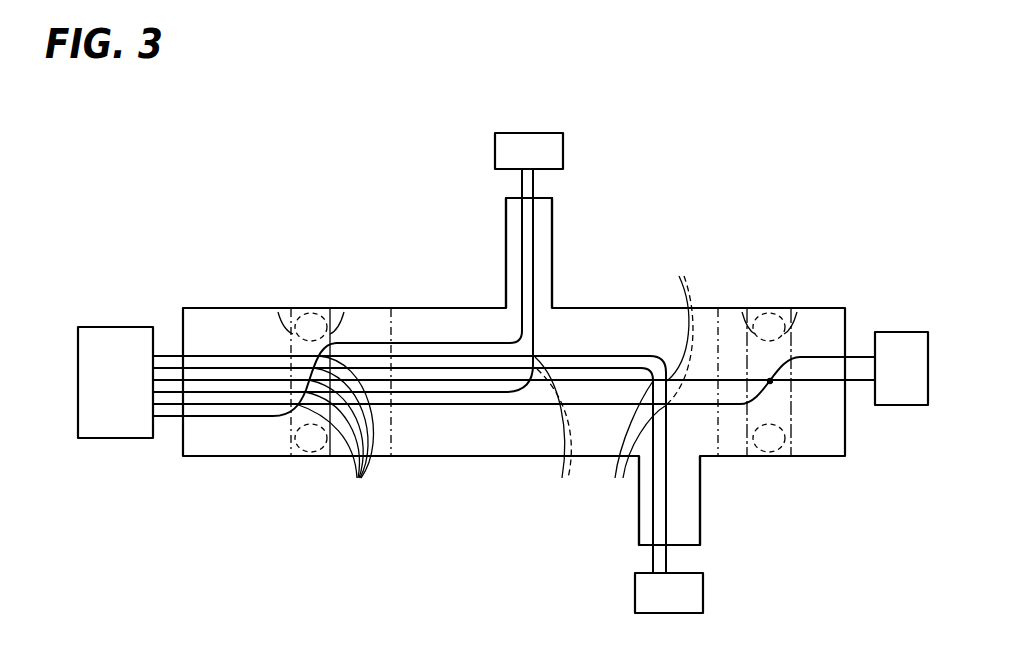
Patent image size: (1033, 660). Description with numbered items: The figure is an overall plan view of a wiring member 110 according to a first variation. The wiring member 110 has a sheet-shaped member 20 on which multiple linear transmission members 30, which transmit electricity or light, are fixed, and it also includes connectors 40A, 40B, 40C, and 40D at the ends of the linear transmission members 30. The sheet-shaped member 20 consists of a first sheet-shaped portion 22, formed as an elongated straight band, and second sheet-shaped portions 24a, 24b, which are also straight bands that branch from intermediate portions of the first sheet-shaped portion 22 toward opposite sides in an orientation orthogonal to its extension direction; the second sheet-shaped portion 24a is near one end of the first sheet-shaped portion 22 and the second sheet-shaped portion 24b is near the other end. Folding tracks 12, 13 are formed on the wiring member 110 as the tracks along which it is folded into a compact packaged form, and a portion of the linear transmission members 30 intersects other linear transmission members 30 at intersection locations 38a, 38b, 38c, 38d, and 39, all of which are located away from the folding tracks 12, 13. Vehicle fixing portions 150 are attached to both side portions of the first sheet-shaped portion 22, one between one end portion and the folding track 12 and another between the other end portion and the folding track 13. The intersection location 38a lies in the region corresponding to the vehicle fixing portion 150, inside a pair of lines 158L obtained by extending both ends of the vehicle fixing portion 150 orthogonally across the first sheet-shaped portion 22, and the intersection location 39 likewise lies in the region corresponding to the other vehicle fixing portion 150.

The wiring member 110 is at (397, 150).
The folding track 12 is at (392, 457).
The folding track 13 is at (716, 460).
The sheet-shaped member 20 is at (470, 463).
The first sheet-shaped portion 22 is at (460, 306).
The second sheet-shaped portion 24a is at (553, 228).
The second sheet-shaped portion 24b is at (701, 525).
The linear transmission member 30 is at (203, 350).
The intersection location 38a is at (339, 433).
The intersection location 38b is at (559, 434).
The intersection location 38c is at (678, 327).
The intersection location 38d is at (629, 458).
The intersection location 39 is at (770, 385).
The connector 40A is at (117, 326).
The connector 40B is at (564, 150).
The connector 40C is at (704, 593).
The connector 40D is at (901, 408).
The vehicle fixing portion 150 is at (311, 307).
The line 158L is at (799, 306).